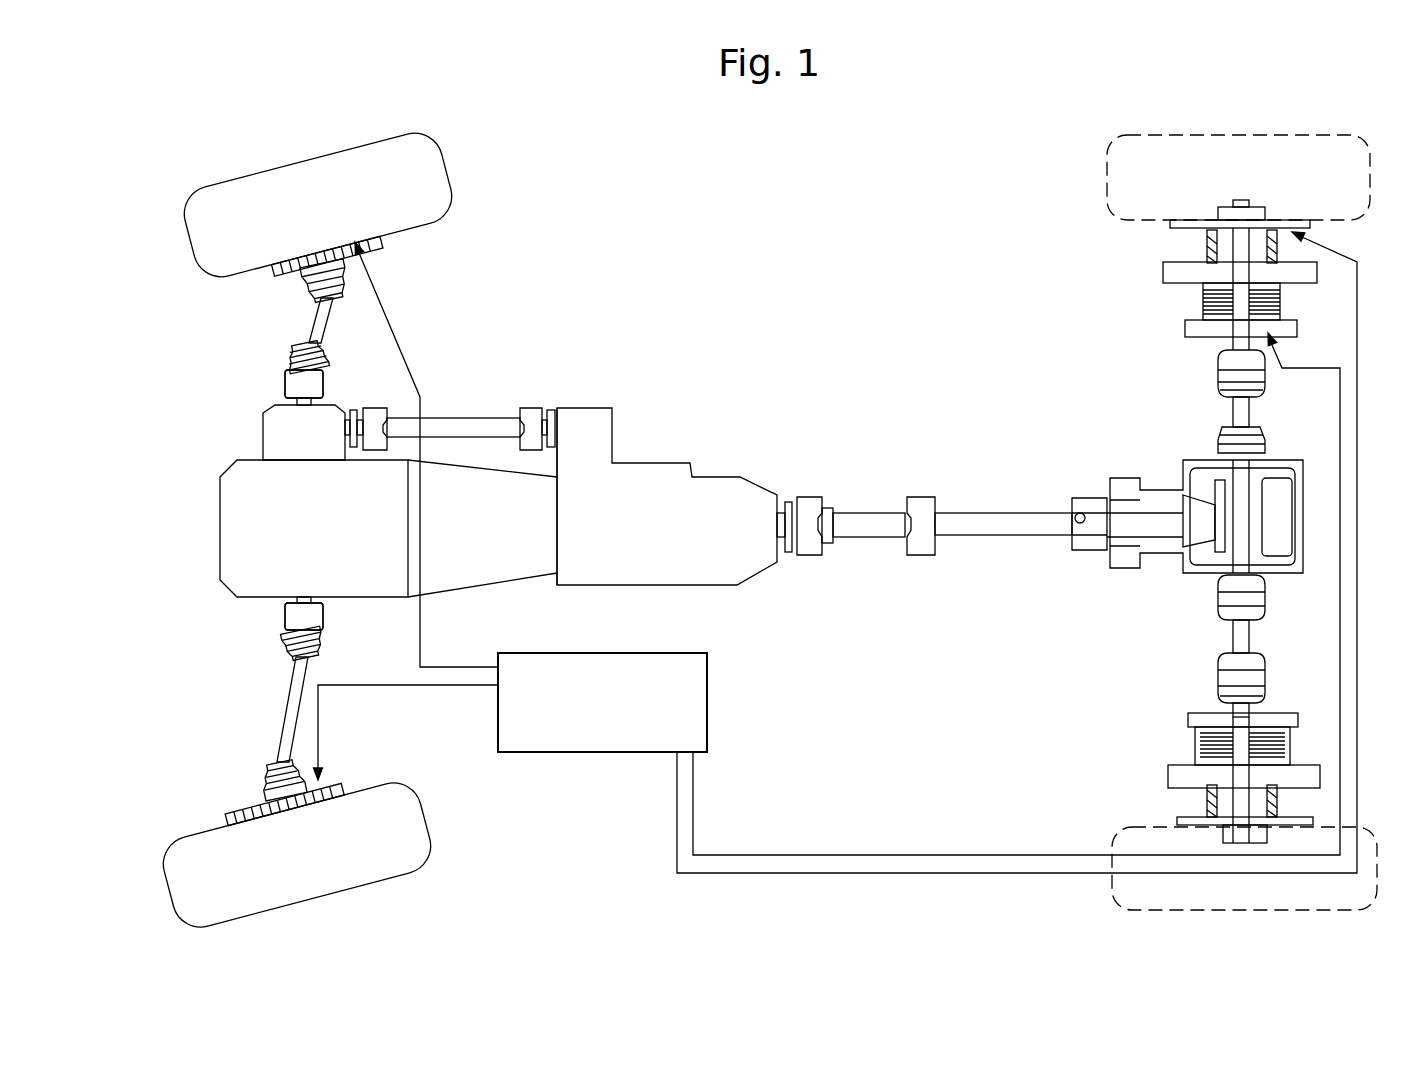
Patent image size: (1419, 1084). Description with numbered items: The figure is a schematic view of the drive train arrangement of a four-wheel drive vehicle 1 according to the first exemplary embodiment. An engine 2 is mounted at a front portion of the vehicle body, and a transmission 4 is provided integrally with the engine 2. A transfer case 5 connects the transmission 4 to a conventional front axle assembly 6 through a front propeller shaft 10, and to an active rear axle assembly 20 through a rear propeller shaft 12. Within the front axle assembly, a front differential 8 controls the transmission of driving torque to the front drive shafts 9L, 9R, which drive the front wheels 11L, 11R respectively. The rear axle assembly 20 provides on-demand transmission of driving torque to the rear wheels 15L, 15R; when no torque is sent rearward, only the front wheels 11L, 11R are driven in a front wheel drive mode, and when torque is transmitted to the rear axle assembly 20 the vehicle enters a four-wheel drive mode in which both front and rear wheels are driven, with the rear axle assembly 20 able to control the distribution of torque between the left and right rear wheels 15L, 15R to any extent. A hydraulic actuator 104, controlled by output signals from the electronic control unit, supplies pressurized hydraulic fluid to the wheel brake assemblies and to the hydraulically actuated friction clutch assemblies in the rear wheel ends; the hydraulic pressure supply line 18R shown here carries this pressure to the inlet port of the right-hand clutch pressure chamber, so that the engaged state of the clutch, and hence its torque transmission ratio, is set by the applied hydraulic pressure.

The four-wheel drive vehicle 1 is at (819, 226).
The engine 2 is at (228, 525).
The transmission 4 is at (480, 575).
The transfer case 5 is at (710, 485).
The front axle assembly 6 is at (236, 657).
The front differential 8 is at (272, 435).
The front drive shaft 9R is at (317, 322).
The front drive shaft 9L is at (287, 717).
The front propeller shaft 10 is at (473, 423).
The front wheel 11R is at (420, 186).
The front wheel 11L is at (412, 847).
The rear propeller shaft 12 is at (995, 517).
The rear wheel 15R is at (1127, 184).
The rear wheel 15L is at (1130, 830).
The hydraulic pressure supply line 18R is at (1298, 372).
The rear axle assembly 20 is at (1129, 440).
The hydraulic actuator 104 is at (707, 702).